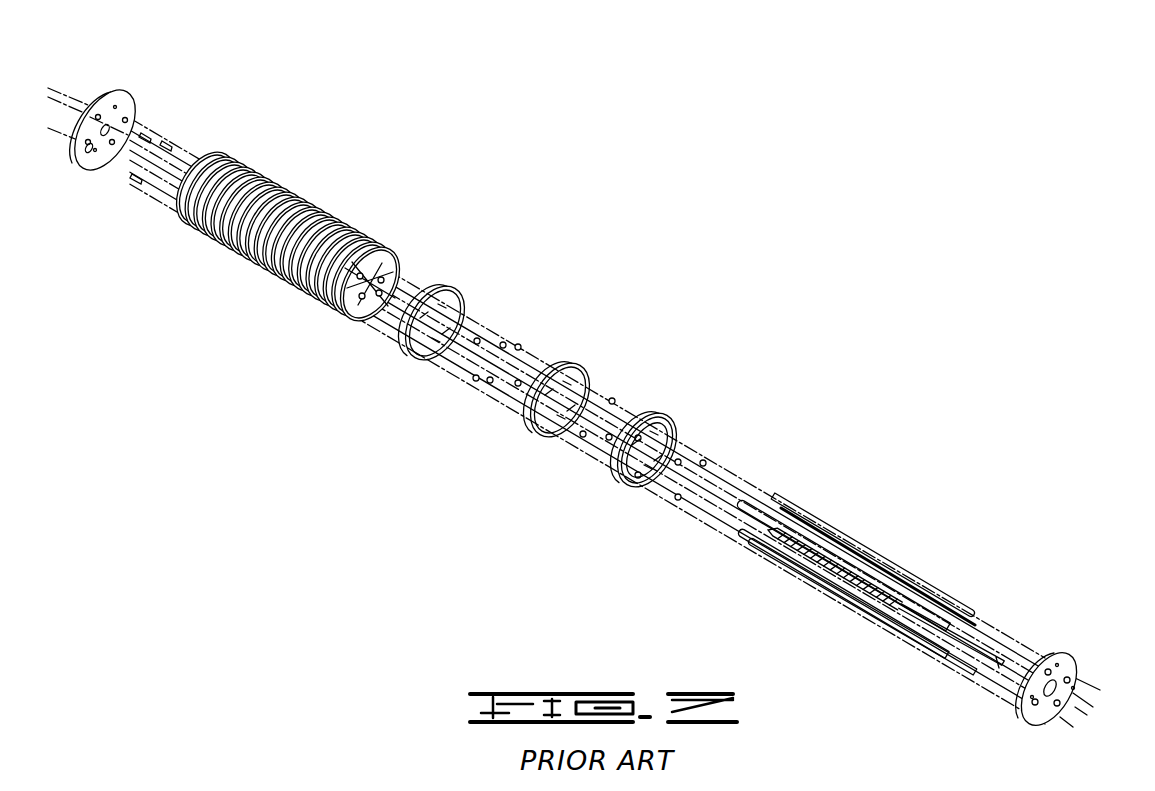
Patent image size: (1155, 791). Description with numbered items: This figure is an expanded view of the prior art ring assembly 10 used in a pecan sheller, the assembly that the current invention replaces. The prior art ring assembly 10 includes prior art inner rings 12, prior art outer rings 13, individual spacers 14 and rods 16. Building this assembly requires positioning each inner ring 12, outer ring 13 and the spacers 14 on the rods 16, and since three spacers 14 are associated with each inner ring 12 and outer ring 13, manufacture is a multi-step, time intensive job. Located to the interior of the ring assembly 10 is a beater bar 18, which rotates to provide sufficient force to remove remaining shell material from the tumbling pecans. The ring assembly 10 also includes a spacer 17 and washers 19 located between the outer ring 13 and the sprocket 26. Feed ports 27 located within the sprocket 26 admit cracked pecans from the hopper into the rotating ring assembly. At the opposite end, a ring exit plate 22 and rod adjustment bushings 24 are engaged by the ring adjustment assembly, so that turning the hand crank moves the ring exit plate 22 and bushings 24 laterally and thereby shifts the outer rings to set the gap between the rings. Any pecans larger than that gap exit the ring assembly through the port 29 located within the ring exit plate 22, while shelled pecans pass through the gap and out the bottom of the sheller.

The prior art ring assembly 10 is at (306, 182).
The prior art inner ring 12 is at (450, 296).
The prior art outer ring 13 is at (575, 372).
The individual spacer 14 is at (480, 338).
The rod 16 is at (800, 506).
The spacer 17 is at (663, 421).
The beater bar 18 is at (976, 656).
The washer 19 is at (614, 400).
The ring exit plate 22 is at (116, 92).
The rod adjustment bushing 24 is at (148, 134).
The sprocket 26 is at (1045, 722).
The feed port 27 is at (1049, 669).
The port 29 is at (92, 156).